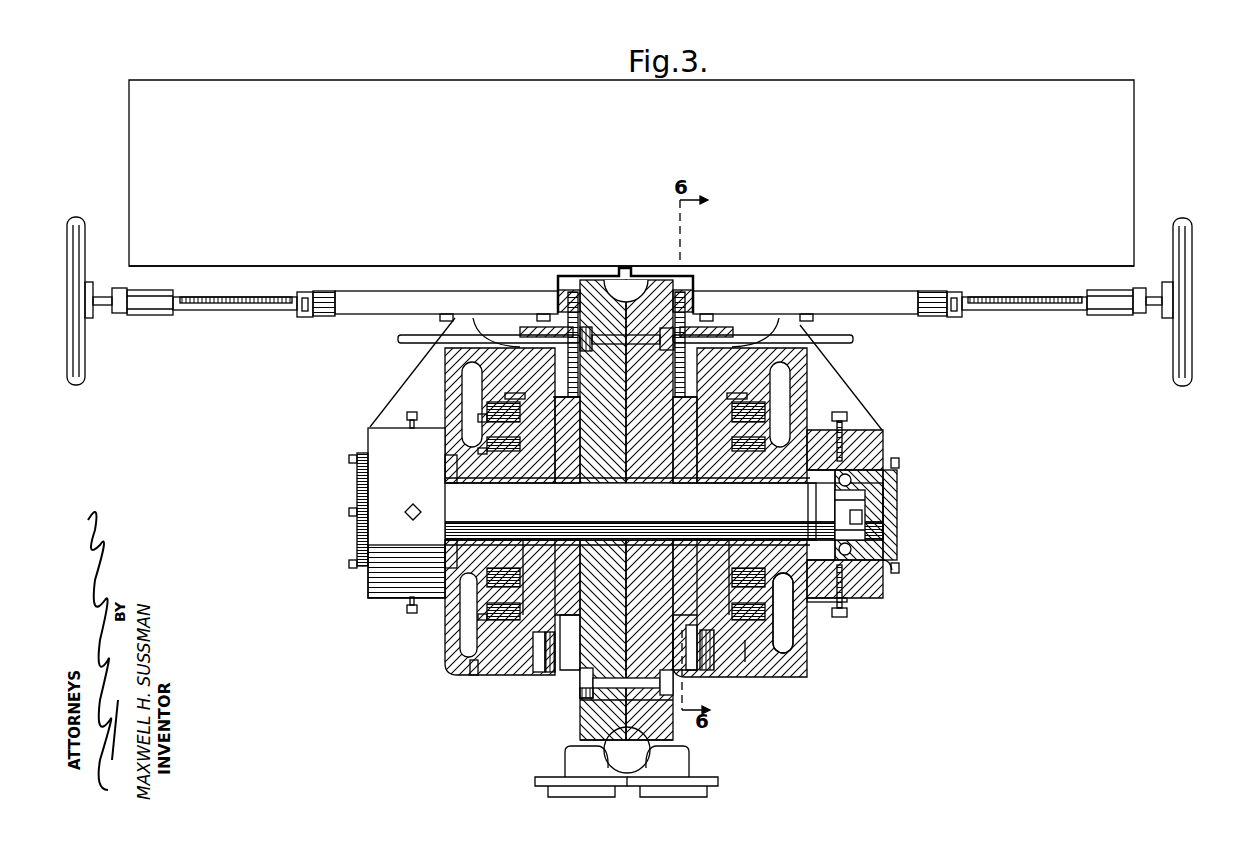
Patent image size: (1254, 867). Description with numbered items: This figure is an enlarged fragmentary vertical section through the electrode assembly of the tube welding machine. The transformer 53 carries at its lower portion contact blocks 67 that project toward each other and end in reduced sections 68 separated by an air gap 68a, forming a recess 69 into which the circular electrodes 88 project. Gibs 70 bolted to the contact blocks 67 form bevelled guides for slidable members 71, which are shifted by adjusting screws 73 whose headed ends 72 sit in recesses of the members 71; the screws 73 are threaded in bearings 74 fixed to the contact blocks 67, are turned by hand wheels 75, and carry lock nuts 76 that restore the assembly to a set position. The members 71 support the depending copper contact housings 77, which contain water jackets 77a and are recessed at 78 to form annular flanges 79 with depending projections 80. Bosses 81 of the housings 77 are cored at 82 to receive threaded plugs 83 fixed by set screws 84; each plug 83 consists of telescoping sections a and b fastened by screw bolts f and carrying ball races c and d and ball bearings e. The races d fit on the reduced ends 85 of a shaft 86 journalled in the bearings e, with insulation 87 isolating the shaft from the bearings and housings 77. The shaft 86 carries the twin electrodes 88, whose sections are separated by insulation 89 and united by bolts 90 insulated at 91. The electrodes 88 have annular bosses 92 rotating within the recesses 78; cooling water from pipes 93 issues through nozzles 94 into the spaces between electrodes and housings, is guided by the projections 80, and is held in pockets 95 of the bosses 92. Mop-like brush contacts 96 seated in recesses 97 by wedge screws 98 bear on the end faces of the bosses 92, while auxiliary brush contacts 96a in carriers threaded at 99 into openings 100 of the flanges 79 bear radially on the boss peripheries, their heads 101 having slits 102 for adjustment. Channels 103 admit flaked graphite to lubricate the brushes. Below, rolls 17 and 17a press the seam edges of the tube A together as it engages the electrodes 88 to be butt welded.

The transformer 53 is at (128, 168).
The contact blocks 67 is at (300, 265).
The reduced sections 68 is at (596, 274).
The air gap 68a is at (626, 268).
The recess 69 is at (560, 274).
The gibs 70 is at (385, 292).
The slidable members 71 is at (325, 318).
The headed ends 72 is at (305, 319).
The adjusting screws 73 is at (240, 312).
The bearings 74 is at (162, 316).
The hand wheels 75 is at (90, 372).
The lock nuts 76 is at (118, 314).
The contact housings 77 is at (812, 392).
The water jackets 77a is at (810, 670).
The recesses 78 is at (770, 641).
The annular flanges 79 is at (745, 663).
The depending projections 80 is at (625, 511).
The bosses 81 is at (900, 437).
The cores 82 is at (817, 600).
The plugs 83 is at (357, 537).
The set screws 84 is at (880, 615).
The reduced ends 85 is at (922, 515).
The shaft 86 is at (664, 508).
The insulation 87 is at (898, 498).
The circular electrodes 88 is at (580, 733).
The insulation 89 is at (633, 465).
The bolts 90 is at (672, 340).
The insulation 91 is at (580, 703).
The annular bosses 92 is at (535, 620).
The pipes 93 is at (400, 341).
The nozzles 94 is at (545, 345).
The pockets 95 is at (575, 620).
The brush contacts 96 is at (527, 470).
The auxiliary brush contacts 96a is at (818, 405).
The recesses 97 is at (512, 465).
The wedge screws 98 is at (462, 452).
The external screwthread 99 is at (697, 664).
The threaded openings 100 is at (722, 668).
The heads 101 is at (538, 670).
The slits 102 is at (546, 680).
The channels 103 is at (490, 350).
The roll 17 is at (563, 762).
The roll 17a is at (705, 765).
The tube A is at (630, 777).
The plug section a is at (905, 590).
The plug section b is at (815, 490).
The ball race c is at (898, 479).
The ball race d is at (898, 553).
The ball bearings e is at (862, 517).
The screw bolts f is at (350, 459).